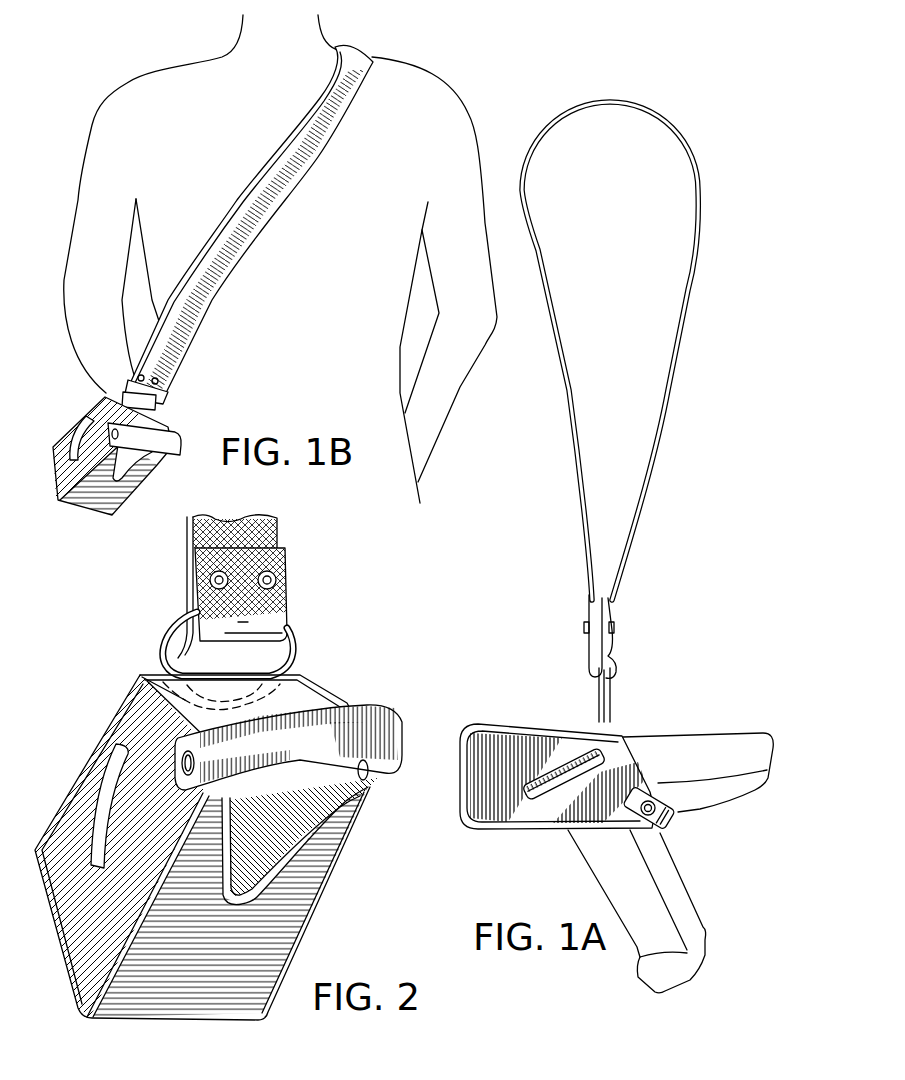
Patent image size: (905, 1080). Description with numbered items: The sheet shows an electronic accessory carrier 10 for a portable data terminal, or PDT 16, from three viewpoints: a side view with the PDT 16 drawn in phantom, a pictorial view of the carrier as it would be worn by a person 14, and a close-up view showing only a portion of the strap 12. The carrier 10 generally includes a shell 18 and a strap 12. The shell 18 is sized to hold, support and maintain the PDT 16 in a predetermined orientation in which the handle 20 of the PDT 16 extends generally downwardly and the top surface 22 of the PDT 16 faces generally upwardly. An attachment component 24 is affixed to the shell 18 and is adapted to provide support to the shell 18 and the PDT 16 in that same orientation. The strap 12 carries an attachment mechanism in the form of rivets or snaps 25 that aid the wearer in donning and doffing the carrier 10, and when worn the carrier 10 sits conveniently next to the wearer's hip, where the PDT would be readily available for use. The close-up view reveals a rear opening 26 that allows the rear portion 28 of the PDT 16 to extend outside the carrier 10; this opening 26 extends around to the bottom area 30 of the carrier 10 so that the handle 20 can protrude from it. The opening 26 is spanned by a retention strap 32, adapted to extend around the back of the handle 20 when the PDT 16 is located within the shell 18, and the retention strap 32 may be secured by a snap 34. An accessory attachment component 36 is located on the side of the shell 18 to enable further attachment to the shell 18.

In FIG. 1B, the electronic accessory carrier 10 is at (118, 424).
In FIG. 2, the electronic accessory carrier 10 is at (236, 814).
In FIG. 1A, the electronic accessory carrier 10 is at (591, 754).
In FIG. 1B, the strap 12 is at (278, 198).
In FIG. 2, the strap 12 is at (222, 573).
In FIG. 1A, the strap 12 is at (579, 498).
In FIG. 1B, the person 14 is at (410, 88).
In FIG. 1A, the portable data terminal (PDT) 16 is at (675, 824).
In FIG. 1A, the shell 18 is at (487, 743).
In FIG. 1A, the handle 20 is at (681, 902).
In FIG. 1A, the top surface 22 is at (701, 734).
In FIG. 2, the attachment component 24 is at (168, 640).
In FIG. 1B, the rivets or snaps 25 is at (143, 378).
In FIG. 2, the rivets or snaps 25 is at (266, 576).
In FIG. 2, the rear opening 26 is at (273, 705).
In FIG. 1A, the rear portion 28 is at (770, 786).
In FIG. 2, the bottom area 30 is at (246, 852).
In FIG. 2, the retention strap 32 is at (286, 753).
In FIG. 1A, the retention strap 32 is at (673, 784).
In FIG. 2, the snap 34 is at (184, 768).
In FIG. 1A, the snap 34 is at (655, 800).
In FIG. 2, the accessory attachment component 36 is at (100, 774).
In FIG. 1A, the accessory attachment component 36 is at (530, 795).